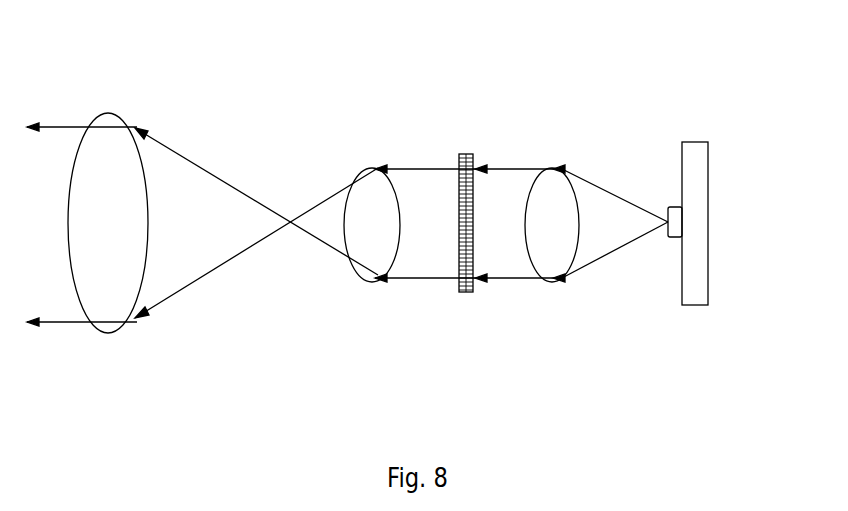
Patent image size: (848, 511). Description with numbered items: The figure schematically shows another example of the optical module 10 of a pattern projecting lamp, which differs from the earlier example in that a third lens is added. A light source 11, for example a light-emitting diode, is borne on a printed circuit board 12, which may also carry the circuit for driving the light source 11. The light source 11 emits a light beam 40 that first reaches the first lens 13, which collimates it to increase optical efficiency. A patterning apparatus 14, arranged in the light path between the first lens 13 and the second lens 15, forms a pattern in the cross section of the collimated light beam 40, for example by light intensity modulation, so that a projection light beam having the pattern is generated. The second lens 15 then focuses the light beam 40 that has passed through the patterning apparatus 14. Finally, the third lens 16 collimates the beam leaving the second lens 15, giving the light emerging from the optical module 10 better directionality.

The optical module 10 is at (434, 26).
The light source 11 is at (668, 208).
The printed circuit board 12 is at (708, 195).
The first lens 13 is at (552, 207).
The patterning apparatus 14 is at (468, 293).
The second lens 15 is at (370, 213).
The third lens 16 is at (115, 168).
The light beam 40 is at (590, 242).